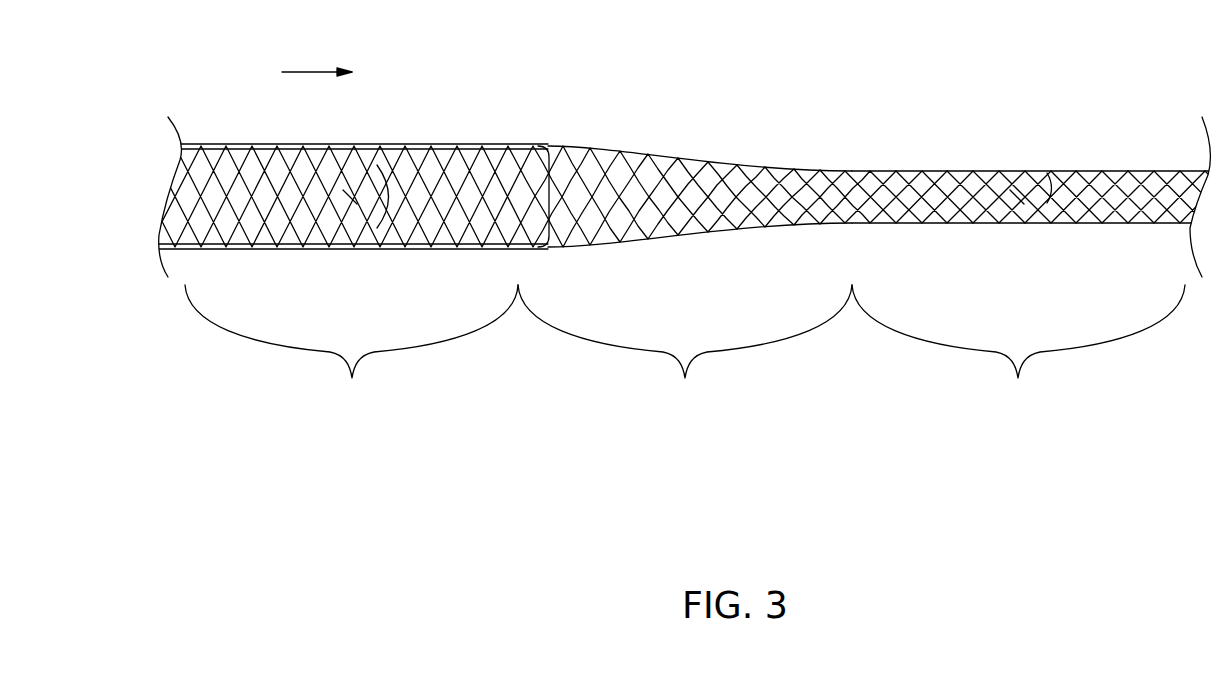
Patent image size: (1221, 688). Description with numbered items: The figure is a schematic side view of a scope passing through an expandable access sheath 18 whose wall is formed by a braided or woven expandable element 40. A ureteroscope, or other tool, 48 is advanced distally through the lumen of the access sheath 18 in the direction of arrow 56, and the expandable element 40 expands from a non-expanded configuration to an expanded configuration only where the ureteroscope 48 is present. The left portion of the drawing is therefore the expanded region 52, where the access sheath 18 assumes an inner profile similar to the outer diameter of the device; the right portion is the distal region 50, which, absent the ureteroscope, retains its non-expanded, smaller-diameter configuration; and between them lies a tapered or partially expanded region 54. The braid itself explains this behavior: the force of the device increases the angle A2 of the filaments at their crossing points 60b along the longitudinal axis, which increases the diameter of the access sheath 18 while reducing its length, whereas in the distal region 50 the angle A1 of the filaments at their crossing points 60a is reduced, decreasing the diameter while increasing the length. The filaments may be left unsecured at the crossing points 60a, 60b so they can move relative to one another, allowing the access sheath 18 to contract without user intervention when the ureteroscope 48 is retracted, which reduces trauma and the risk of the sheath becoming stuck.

The access sheath 18 is at (950, 171).
The expandable element 40 is at (663, 160).
The ureteroscope 48 is at (543, 146).
The distal region 50 is at (1018, 347).
The expanded region 52 is at (351, 347).
The tapered or partially expanded region 54 is at (685, 347).
The arrow 56 is at (302, 72).
The crossing points 60a is at (1017, 197).
The crossing points 60b is at (350, 197).
The angle of the filaments A1 is at (1068, 178).
The angle of the filaments A2 is at (417, 145).